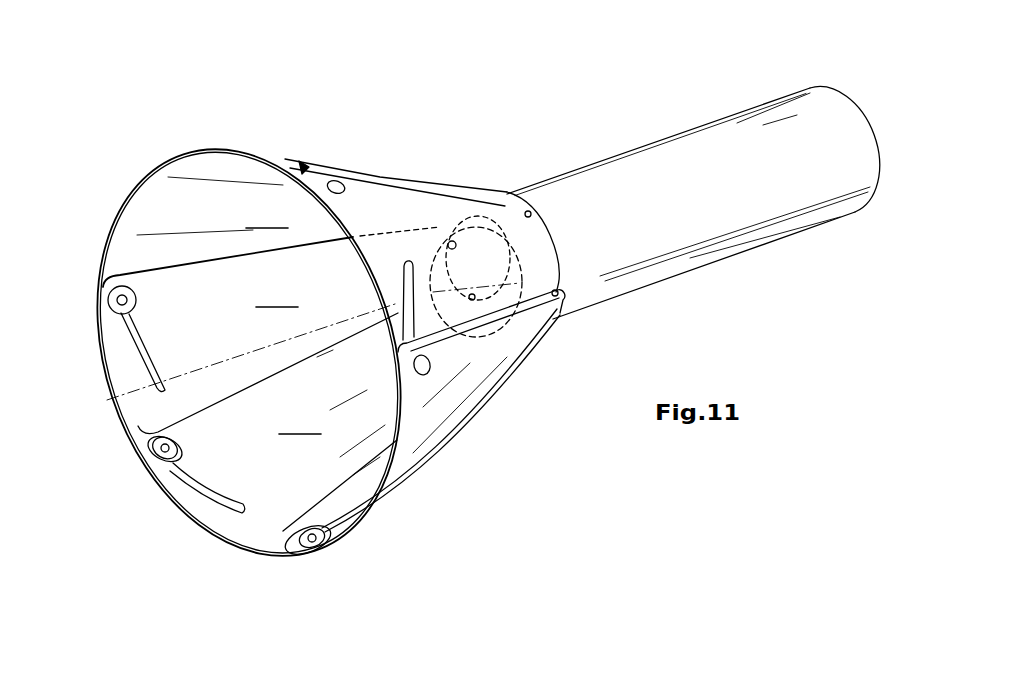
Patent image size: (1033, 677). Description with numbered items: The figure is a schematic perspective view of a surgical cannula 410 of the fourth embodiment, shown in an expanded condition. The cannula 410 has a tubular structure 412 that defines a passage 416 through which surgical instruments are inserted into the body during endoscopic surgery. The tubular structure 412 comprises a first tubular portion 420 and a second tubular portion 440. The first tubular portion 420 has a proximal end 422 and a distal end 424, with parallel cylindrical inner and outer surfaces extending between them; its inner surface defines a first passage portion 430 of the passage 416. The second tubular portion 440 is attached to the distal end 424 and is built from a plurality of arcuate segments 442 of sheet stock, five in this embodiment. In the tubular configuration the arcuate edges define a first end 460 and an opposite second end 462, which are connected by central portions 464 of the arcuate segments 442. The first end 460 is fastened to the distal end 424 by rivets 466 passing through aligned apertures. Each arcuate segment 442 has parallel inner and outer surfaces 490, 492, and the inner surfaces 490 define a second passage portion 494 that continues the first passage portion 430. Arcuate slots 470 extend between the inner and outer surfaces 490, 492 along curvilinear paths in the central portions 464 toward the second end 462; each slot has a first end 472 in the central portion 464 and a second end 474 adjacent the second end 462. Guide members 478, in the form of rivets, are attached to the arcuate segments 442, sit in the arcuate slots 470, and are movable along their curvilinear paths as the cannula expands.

The cannula 410 is at (697, 124).
The tubular structure 412 is at (665, 289).
The passage 416 is at (477, 250).
The first tubular portion 420 is at (766, 251).
The proximal end 422 is at (828, 110).
The distal end 424 is at (513, 213).
The first passage portion 430 is at (500, 297).
The second tubular portion 440 is at (510, 383).
The arcuate segments 442 is at (360, 213).
The first end 460 is at (543, 242).
The second end 462 is at (218, 518).
The central portions 464 is at (413, 213).
The rivets 466 is at (452, 241).
The arcuate slots 470 is at (302, 163).
The first ends 472 is at (238, 513).
The second ends 474 is at (177, 463).
The guide members 478 is at (336, 181).
The inner surfaces 490 is at (227, 175).
The outer surfaces 492 is at (385, 207).
The second passage portion 494 is at (167, 237).